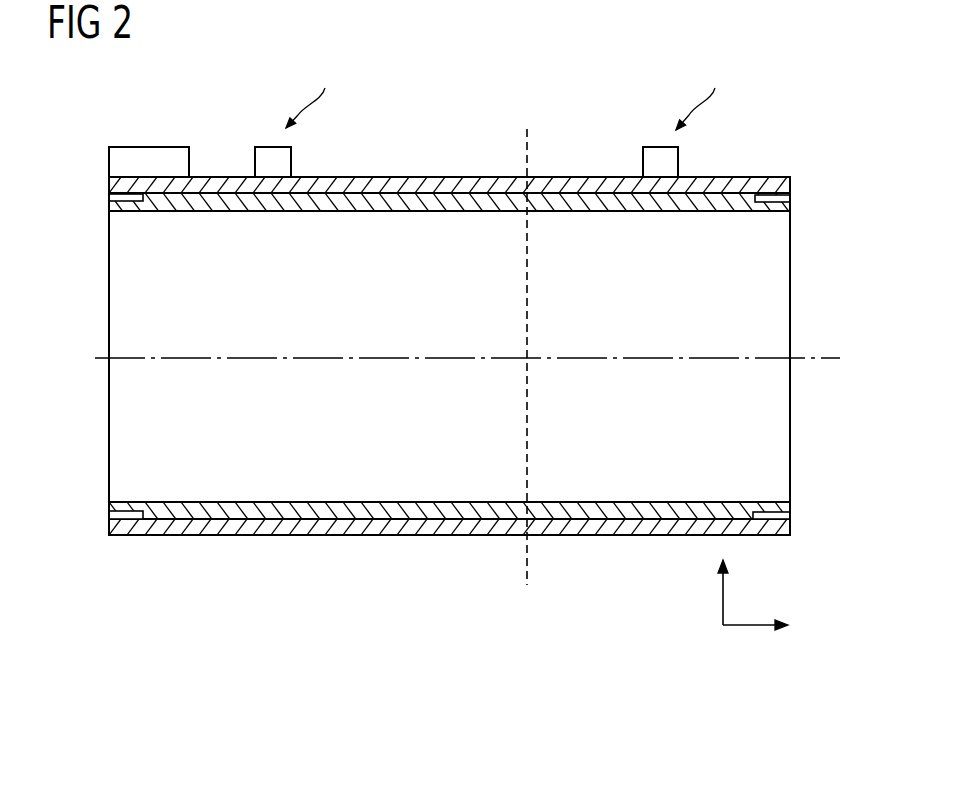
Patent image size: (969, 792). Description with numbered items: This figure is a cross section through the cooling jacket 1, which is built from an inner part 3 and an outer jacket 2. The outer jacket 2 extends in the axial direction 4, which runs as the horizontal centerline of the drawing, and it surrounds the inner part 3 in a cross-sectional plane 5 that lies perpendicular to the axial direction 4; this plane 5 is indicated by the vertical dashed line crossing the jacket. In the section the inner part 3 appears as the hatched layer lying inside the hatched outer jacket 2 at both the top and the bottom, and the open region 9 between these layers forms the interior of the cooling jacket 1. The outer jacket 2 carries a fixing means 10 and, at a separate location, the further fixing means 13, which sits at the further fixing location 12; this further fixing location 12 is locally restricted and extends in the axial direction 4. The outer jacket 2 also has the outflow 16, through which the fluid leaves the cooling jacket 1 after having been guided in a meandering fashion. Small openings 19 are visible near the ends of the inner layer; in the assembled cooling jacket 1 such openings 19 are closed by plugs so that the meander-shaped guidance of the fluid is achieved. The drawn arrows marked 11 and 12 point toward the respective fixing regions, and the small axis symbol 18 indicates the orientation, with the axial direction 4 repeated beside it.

The cooling jacket 1 is at (777, 103).
The outer jacket 2 is at (424, 530).
The inner part 3 is at (338, 510).
The axial direction 4 is at (828, 358).
The cross-sectional plane 5 is at (527, 140).
The interior cavity 9 is at (127, 295).
The fixing means 10 is at (265, 147).
The arrow 11 is at (309, 90).
The further fixing location 12 is at (699, 91).
The further fixing means 13 is at (655, 147).
The outflow 16 is at (148, 147).
The coordinate system 18 is at (723, 601).
The openings 19 is at (116, 197).